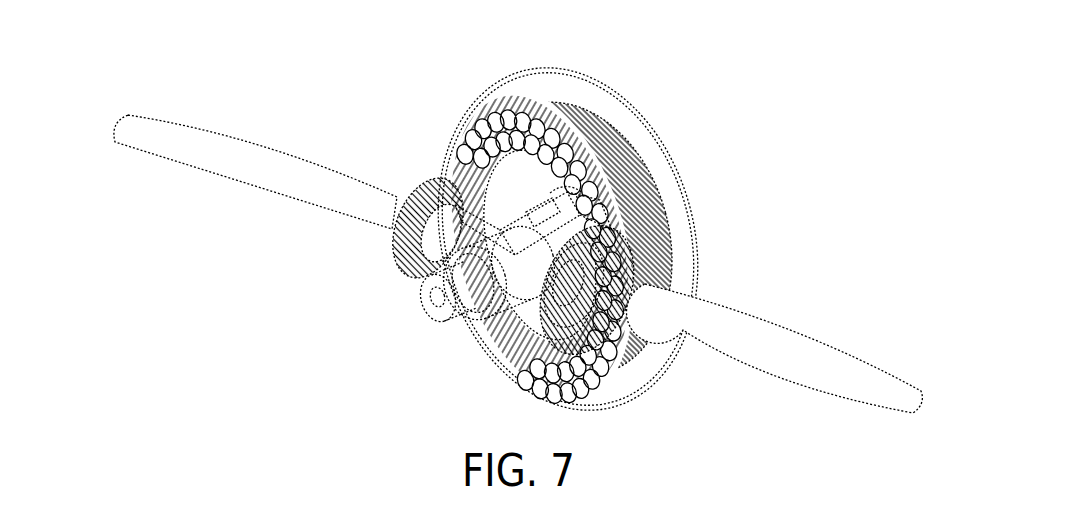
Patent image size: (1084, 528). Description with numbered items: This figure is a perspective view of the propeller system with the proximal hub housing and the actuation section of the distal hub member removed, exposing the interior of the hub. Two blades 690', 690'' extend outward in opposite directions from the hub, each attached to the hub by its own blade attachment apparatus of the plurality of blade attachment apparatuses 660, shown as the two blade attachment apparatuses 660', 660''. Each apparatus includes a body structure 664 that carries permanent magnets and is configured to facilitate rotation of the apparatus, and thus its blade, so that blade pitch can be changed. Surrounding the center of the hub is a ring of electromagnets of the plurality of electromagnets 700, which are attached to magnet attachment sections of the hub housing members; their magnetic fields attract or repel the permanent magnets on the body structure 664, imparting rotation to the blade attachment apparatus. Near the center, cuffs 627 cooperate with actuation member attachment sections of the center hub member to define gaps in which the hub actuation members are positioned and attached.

The plurality of electromagnets 700 is at (498, 100).
The body structure 664 is at (590, 322).
The cuff 627 is at (582, 203).
The plurality of blade attachment apparatuses 660 is at (490, 312).
The blade attachment apparatus 660' is at (427, 190).
The blade attachment apparatus 660'' is at (646, 261).
The blade 690' is at (255, 150).
The blade 690'' is at (775, 319).